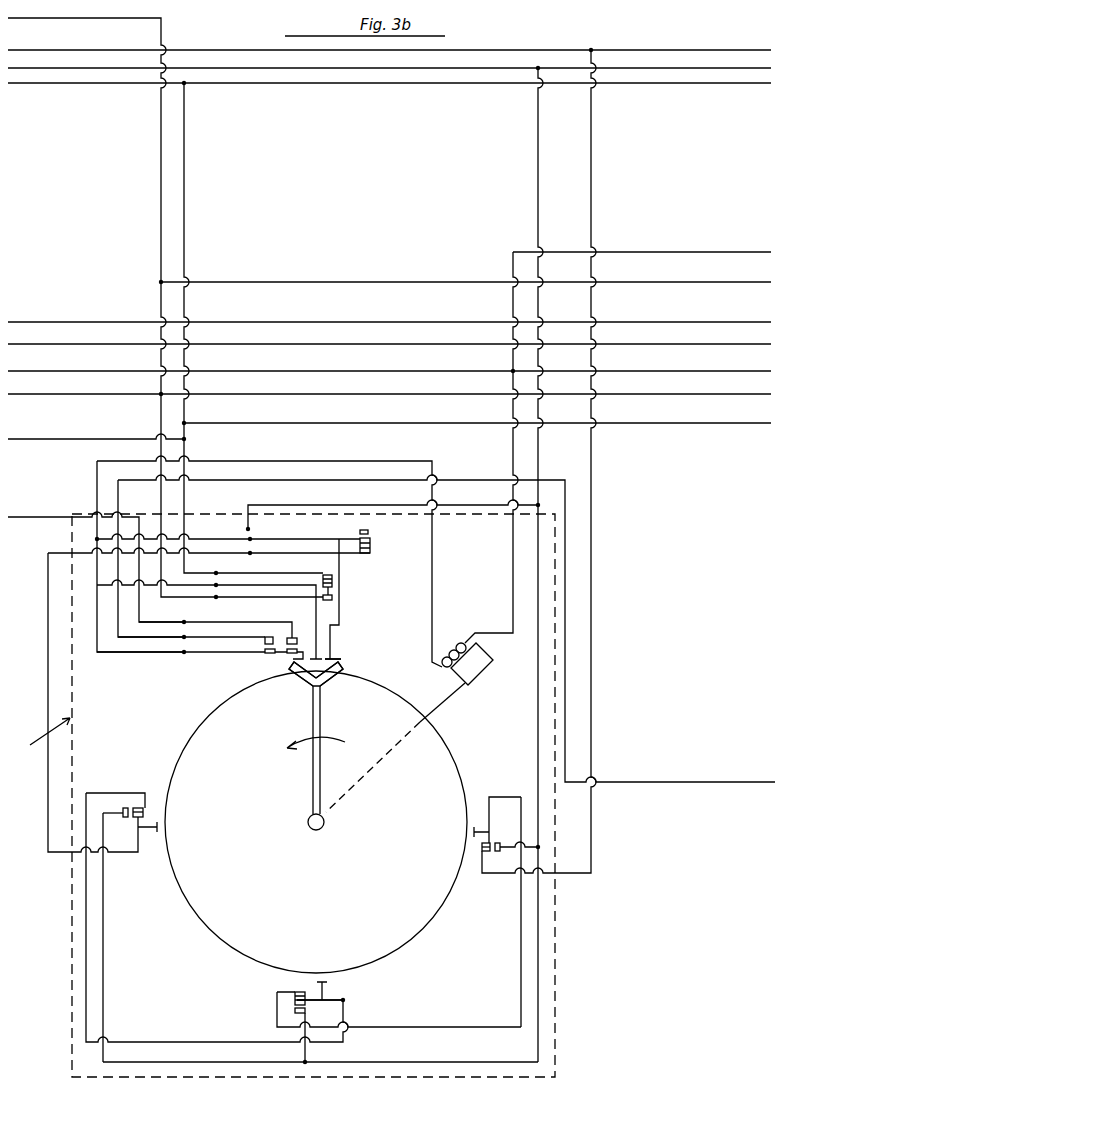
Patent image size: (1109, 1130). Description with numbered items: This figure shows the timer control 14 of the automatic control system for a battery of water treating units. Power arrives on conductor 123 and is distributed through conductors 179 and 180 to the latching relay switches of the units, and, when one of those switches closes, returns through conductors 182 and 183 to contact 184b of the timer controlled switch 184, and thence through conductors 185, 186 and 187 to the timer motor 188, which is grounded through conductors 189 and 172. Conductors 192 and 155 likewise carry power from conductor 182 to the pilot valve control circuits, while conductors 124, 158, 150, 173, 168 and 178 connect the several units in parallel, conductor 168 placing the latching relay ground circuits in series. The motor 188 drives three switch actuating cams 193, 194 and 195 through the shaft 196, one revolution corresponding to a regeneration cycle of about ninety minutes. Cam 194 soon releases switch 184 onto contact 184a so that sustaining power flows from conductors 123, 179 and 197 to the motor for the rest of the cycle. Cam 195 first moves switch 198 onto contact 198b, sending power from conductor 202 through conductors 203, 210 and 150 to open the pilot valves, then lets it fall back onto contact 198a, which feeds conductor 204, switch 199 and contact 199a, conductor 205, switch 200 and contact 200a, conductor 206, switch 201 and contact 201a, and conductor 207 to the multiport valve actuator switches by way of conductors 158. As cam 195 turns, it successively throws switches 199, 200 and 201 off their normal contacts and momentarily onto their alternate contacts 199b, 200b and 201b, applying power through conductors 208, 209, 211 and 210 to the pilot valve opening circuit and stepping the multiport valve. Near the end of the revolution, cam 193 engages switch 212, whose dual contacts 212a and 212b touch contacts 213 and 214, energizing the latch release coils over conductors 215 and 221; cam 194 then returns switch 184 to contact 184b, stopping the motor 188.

The conductor 124 is at (24, 17).
The conductors 158 is at (24, 50).
The conductors 150 is at (24, 68).
The conductor 155 is at (24, 83).
The conductor 179 is at (161, 310).
The conductor 197 is at (161, 498).
The conductor 192 is at (184, 228).
The conductor 183 is at (184, 494).
The conductor 210 is at (538, 217).
The conductor 207 is at (592, 606).
The conductor 172 is at (728, 256).
The conductor 123 is at (728, 286).
The conductor 189 is at (513, 454).
The conductor 173 is at (24, 322).
The conductor 168 is at (24, 344).
The conductor 178 is at (24, 371).
The conductor 180 is at (24, 394).
The conductor 182 is at (24, 439).
The conductor 187 is at (200, 463).
The conductor 221 is at (201, 480).
The conductor 203 is at (456, 505).
The conductor 215 is at (20, 519).
The conductor 186 is at (97, 572).
The conductor 185 is at (117, 590).
The conductor 202 is at (233, 538).
The switch 198 is at (347, 540).
The contact 198a is at (372, 548).
The contact 198b is at (370, 531).
The timer controlled switch 184 is at (310, 585).
The contact 184a is at (328, 600).
The contact 184b is at (327, 576).
The conductor 204 is at (48, 640).
The contact 214 is at (272, 633).
The contact 213 is at (295, 638).
The switch 212 is at (210, 656).
The contact 212a is at (265, 650).
The contact 212b is at (287, 654).
The cam 194 is at (312, 681).
The cam 193 is at (289, 668).
The cam 195 is at (343, 664).
The timer motor 188 is at (487, 645).
The shaft 196 is at (432, 712).
The timer control 14 is at (283, 795).
The conductor 211 is at (538, 739).
The switch 201 is at (490, 797).
The contact 201a is at (482, 852).
The contact 201b is at (497, 843).
The switch 199 is at (140, 852).
The contact 199a is at (146, 808).
The contact 199b is at (123, 811).
The conductor 208 is at (103, 975).
The conductor 205 is at (86, 960).
The switch 200 is at (343, 1001).
The contact 200a is at (295, 993).
The switch contact 200b is at (295, 1011).
The conductor 206 is at (438, 1027).
The conductor 209 is at (440, 1062).